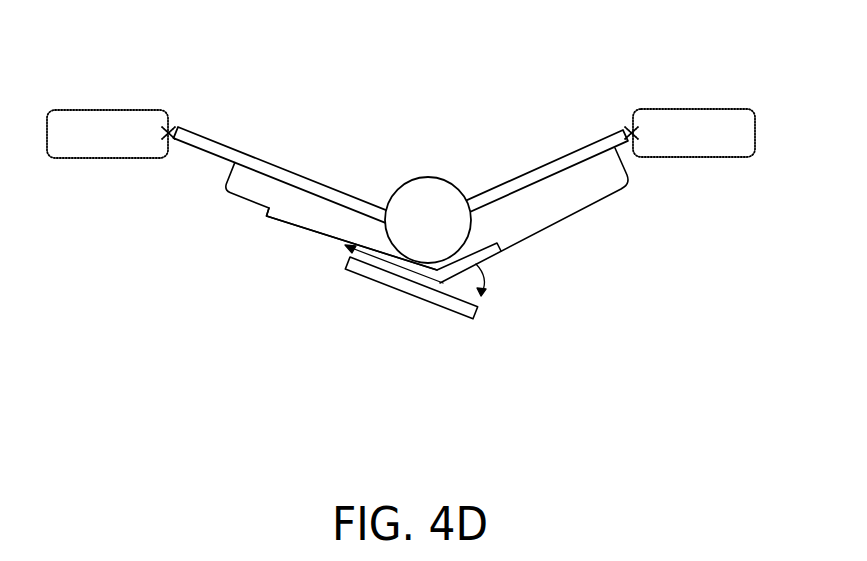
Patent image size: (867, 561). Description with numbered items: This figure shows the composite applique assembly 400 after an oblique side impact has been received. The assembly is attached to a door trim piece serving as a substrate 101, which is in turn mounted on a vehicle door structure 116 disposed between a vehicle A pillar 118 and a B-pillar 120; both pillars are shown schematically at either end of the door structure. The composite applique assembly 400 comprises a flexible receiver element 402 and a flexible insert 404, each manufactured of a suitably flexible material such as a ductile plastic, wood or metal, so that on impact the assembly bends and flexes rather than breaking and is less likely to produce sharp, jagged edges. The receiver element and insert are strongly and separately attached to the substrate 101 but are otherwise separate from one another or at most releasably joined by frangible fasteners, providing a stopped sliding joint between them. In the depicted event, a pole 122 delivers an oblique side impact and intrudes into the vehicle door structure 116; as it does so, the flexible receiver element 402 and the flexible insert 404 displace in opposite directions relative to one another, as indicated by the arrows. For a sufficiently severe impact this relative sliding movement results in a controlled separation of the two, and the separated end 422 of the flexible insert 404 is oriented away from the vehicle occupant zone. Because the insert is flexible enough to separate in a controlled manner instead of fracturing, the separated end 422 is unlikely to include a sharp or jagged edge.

The B-pillar 120 is at (108, 109).
The A pillar 118 is at (694, 108).
The vehicle door structure 116 is at (230, 147).
The pole 122 is at (427, 188).
The housing 101 is at (612, 178).
The flexible receiver element 402 is at (280, 221).
The flexible insert 404 is at (448, 302).
The composite applique assembly 400 is at (393, 297).
The separated end 422 is at (483, 310).